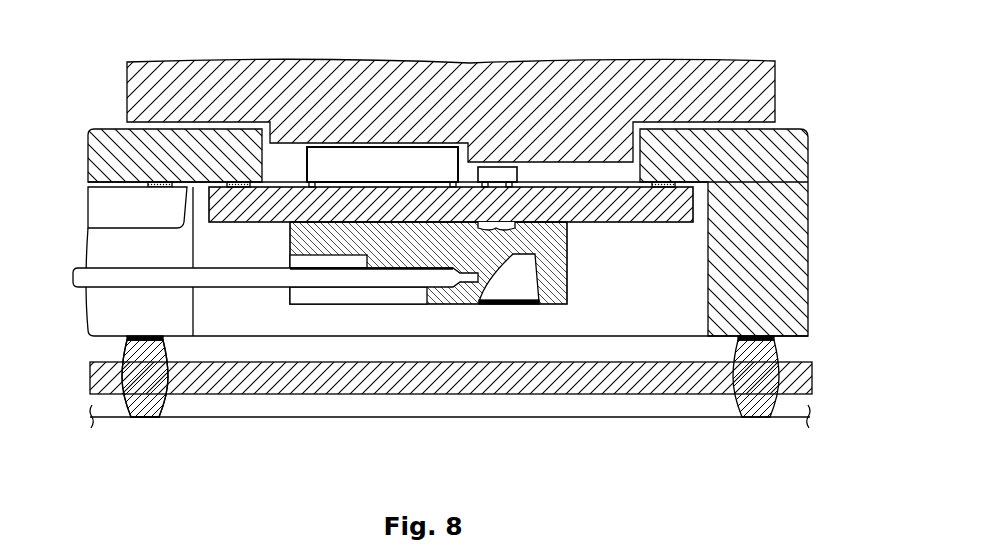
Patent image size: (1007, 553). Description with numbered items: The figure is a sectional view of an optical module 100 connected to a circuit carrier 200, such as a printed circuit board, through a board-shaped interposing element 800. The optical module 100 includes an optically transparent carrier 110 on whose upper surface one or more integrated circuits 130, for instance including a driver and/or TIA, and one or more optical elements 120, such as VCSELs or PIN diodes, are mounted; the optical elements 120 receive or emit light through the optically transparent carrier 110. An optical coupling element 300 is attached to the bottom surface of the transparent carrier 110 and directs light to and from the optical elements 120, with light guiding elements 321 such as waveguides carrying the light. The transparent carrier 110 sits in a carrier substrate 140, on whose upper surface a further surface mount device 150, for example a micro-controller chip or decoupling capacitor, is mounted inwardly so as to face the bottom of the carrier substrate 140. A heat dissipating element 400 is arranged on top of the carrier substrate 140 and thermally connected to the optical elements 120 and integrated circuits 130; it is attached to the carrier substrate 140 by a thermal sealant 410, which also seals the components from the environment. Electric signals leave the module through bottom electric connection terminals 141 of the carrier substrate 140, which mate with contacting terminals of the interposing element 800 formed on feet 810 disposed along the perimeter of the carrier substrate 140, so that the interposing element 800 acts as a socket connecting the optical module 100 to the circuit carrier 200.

The optical module 100 is at (436, 182).
The optically transparent carrier 110 is at (612, 205).
The optical element 120 is at (497, 167).
The integrated circuit 130 is at (353, 163).
The carrier substrate 140 is at (100, 153).
The bottom electric connection terminal 141 is at (172, 342).
The surface mount device 150 is at (103, 203).
The circuit carrier 200 is at (388, 449).
The optical coupling element 300 is at (457, 305).
The light guiding element 321 is at (80, 283).
The heat dissipating element 400 is at (140, 90).
The thermal sealant 410 is at (773, 126).
The interposing element 800 is at (607, 388).
The foot 810 is at (143, 406).